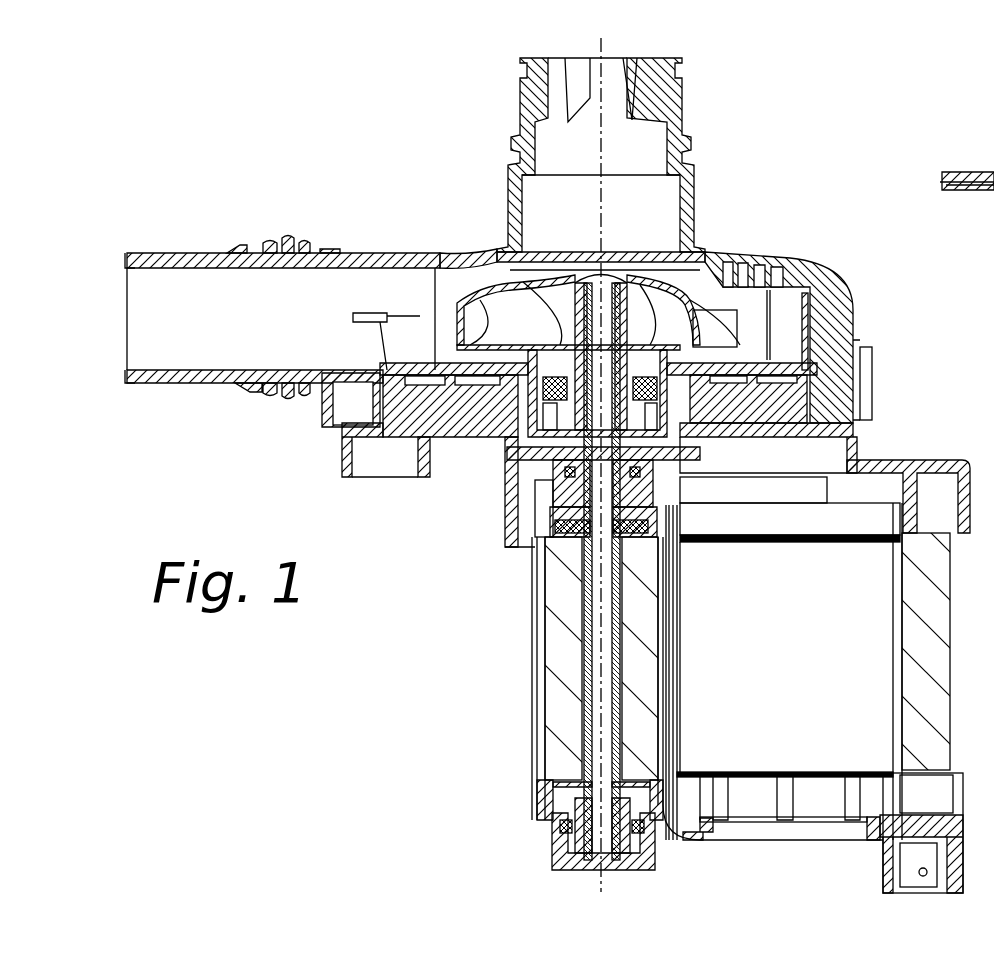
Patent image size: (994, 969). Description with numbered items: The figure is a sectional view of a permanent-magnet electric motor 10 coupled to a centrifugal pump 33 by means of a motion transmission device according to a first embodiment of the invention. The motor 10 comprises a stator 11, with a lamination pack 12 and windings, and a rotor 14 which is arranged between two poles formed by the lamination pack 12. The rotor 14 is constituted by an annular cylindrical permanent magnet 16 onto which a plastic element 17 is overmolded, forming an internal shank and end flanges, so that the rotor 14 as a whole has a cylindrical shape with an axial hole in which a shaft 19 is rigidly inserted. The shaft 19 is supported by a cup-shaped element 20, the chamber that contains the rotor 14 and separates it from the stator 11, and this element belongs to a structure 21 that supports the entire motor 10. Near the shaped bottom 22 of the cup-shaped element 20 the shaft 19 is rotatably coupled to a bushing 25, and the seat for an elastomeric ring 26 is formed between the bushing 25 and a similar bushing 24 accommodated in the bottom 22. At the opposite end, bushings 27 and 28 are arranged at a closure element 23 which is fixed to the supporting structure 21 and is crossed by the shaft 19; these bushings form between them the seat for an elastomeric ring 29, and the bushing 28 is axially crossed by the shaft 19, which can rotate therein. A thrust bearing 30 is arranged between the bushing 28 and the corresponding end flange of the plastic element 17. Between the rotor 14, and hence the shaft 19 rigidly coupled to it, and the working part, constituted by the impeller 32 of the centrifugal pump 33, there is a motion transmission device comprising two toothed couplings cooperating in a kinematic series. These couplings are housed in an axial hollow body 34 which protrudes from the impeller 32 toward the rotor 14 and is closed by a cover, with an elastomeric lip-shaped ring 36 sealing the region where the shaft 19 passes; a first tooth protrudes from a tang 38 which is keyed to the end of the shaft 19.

The permanent-magnet electric motor 10 is at (510, 730).
The stator 11 is at (780, 848).
The lamination pack 12 is at (937, 623).
The rotor 14 is at (530, 645).
The annular cylindrical permanent magnet 16 is at (540, 688).
The plastic element 17 is at (565, 750).
The shaft 19 is at (612, 630).
The cup-shaped element 20 is at (548, 800).
The supporting structure 21 is at (913, 450).
The shaped bottom 22 is at (653, 855).
The closure element 23 is at (510, 418).
The bushing 24 is at (560, 850).
The bushing 25 is at (622, 776).
The elastomeric ring 26 is at (667, 813).
The bushing 27 is at (548, 482).
The bushing 28 is at (553, 466).
The elastomeric ring 29 is at (648, 476).
The thrust bearing 30 is at (663, 533).
The impeller 32 is at (735, 293).
The centrifugal pump 33 is at (740, 240).
The axial hollow body 34 is at (700, 383).
The elastomeric lip-shaped ring 36 is at (970, 223).
The tang 38 is at (967, 126).